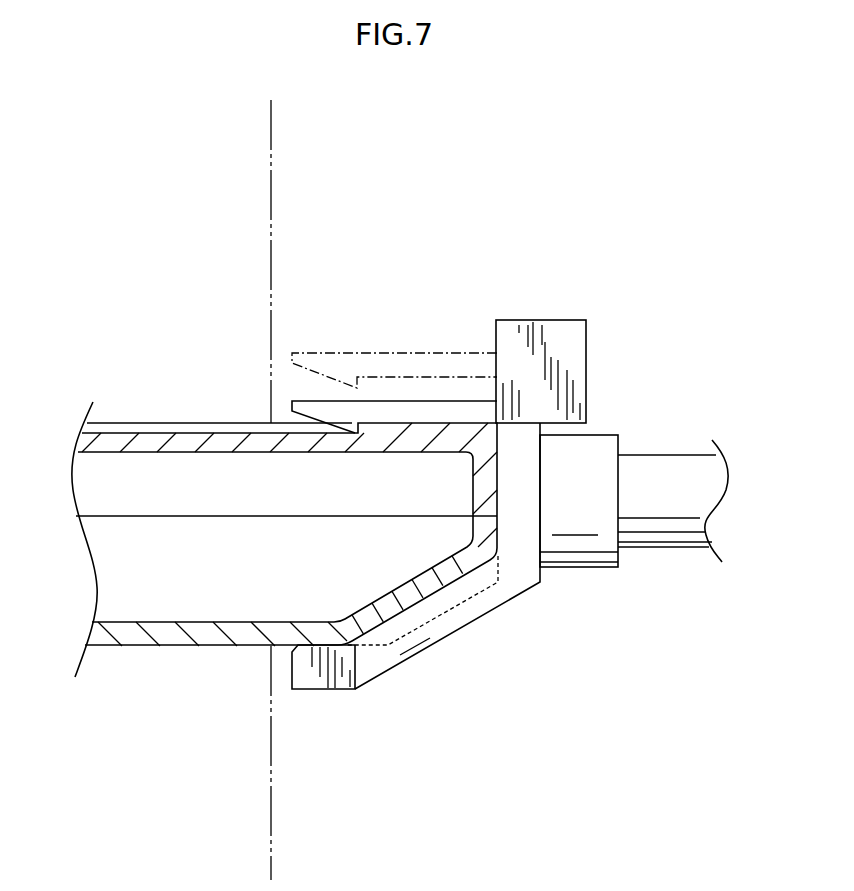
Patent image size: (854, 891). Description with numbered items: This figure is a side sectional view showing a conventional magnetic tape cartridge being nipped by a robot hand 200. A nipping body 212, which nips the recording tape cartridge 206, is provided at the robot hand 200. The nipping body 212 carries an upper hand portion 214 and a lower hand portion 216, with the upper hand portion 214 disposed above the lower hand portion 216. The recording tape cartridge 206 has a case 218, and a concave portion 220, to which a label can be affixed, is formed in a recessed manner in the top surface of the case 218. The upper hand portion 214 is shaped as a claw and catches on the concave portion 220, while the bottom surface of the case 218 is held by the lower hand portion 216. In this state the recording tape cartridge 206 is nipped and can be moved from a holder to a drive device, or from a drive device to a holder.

The robot hand 200 is at (604, 313).
The recording tape cartridge 206 is at (216, 650).
The nipping body 212 is at (510, 607).
The upper hand portion 214 is at (383, 407).
The lower hand portion 216 is at (430, 635).
The case 218 is at (140, 468).
The concave portion 220 is at (252, 434).